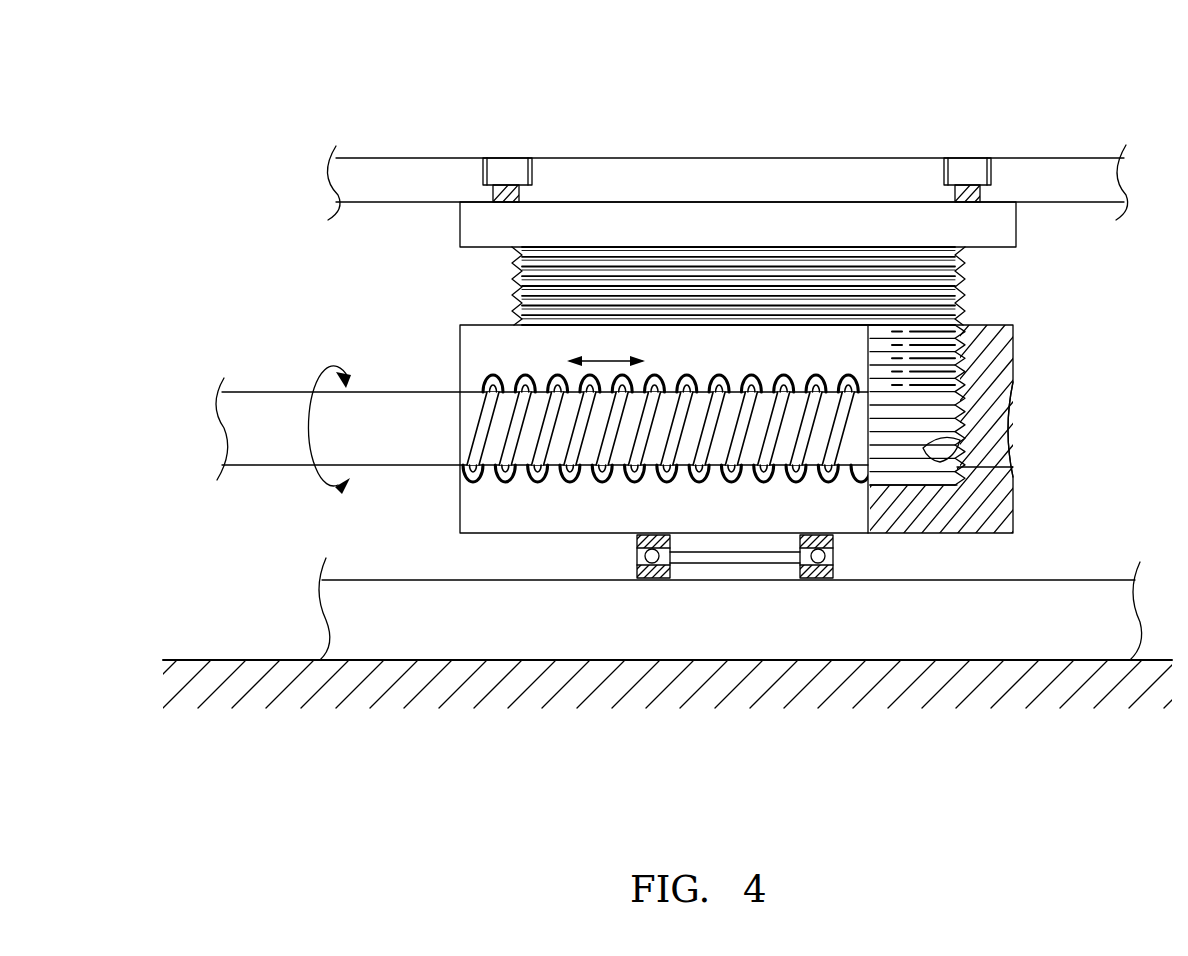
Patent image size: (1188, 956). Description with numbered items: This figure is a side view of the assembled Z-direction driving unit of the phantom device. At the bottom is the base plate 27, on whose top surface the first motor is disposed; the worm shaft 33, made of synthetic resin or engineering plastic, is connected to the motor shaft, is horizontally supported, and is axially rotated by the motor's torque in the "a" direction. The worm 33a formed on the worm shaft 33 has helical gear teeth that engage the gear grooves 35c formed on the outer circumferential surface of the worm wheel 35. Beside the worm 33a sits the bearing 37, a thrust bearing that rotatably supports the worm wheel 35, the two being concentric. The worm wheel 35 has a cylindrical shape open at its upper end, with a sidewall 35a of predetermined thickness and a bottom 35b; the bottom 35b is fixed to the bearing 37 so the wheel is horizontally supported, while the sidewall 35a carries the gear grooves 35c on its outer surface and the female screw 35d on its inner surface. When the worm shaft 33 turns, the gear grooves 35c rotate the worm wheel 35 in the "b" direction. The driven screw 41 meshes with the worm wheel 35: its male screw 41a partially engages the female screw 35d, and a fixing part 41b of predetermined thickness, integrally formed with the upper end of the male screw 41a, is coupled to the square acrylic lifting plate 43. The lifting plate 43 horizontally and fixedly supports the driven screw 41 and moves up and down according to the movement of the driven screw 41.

The base plate 27 is at (410, 625).
The worm shaft 33 is at (270, 407).
The worm 33a is at (626, 458).
The worm wheel 35 is at (822, 555).
The sidewall 35a is at (1015, 350).
The bottom 35b is at (912, 512).
The gear grooves 35c is at (1005, 435).
The female screw 35d is at (1010, 460).
The bearing 37 is at (736, 588).
The driven screw 41 is at (788, 252).
The male screw 41a is at (856, 283).
The fixing part 41b is at (762, 228).
The lifting plate 43 is at (644, 175).